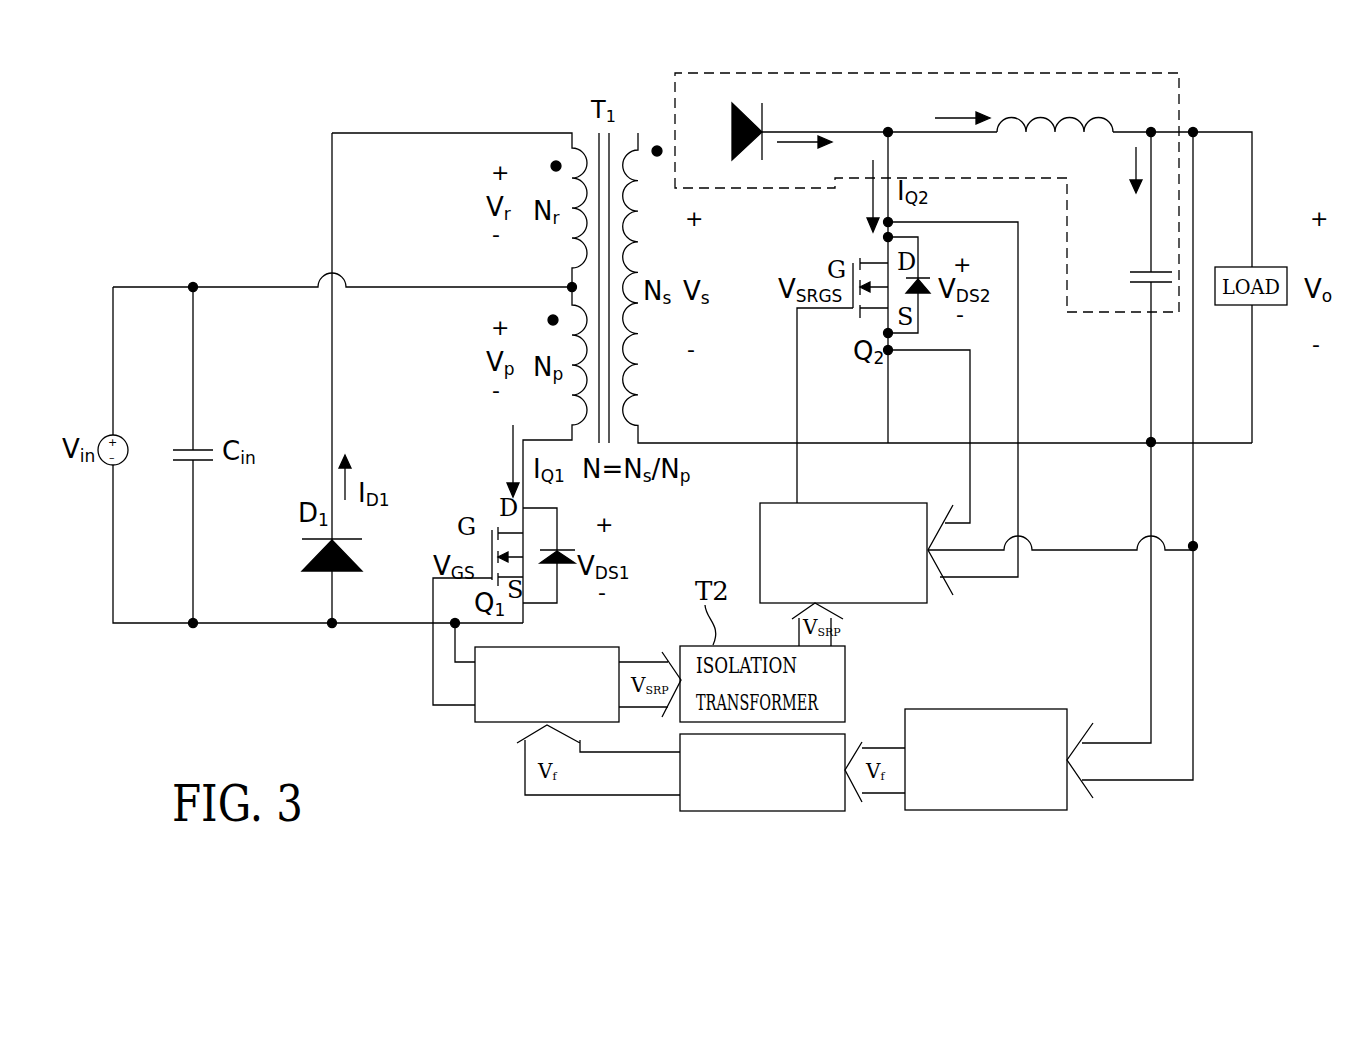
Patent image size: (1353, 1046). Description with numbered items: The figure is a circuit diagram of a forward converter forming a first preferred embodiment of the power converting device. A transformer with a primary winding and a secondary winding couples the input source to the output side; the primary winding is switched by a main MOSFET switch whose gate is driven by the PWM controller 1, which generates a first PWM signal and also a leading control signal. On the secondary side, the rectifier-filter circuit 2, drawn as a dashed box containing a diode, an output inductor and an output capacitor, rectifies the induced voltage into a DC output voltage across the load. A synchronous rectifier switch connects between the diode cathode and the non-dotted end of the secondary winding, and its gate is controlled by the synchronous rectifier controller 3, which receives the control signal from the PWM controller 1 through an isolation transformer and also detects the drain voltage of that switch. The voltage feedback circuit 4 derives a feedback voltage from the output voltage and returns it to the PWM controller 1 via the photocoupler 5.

The pulse-width modulation (PWM) controller 1 is at (595, 647).
The rectifier-filter circuit 2 is at (1179, 105).
The synchronous rectifier controller 3 is at (760, 550).
The voltage feedback circuit 4 is at (992, 709).
The photocoupler 5 is at (845, 735).